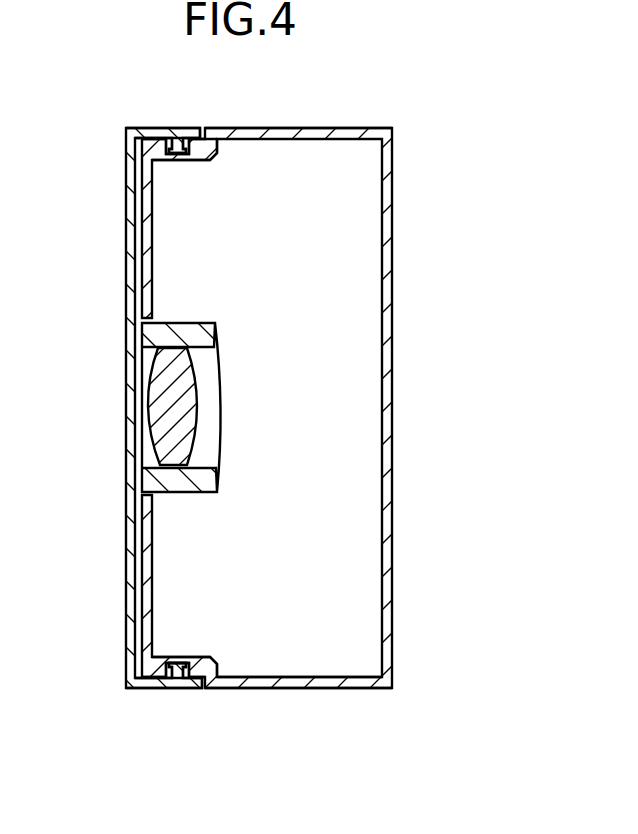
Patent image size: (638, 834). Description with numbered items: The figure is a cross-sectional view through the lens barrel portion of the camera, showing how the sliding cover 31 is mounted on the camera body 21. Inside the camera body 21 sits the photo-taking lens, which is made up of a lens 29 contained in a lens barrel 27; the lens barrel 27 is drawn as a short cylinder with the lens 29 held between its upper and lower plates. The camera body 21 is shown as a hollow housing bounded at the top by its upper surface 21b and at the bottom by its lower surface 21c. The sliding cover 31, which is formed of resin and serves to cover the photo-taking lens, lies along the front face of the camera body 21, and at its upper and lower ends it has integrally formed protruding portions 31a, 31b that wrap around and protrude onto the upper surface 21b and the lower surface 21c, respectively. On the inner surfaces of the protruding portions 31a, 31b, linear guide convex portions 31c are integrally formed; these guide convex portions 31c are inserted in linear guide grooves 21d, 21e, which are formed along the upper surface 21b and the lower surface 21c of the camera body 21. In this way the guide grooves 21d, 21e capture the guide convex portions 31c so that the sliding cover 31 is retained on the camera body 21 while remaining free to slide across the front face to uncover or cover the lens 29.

The camera body 21 is at (312, 118).
The upper surface 21b is at (238, 128).
The lower surface 21c is at (320, 680).
The linear guide groove 21d is at (177, 161).
The linear guide groove 21e is at (180, 660).
The lens barrel 27 is at (192, 336).
The lens 29 is at (190, 424).
The sliding cover 31 is at (116, 252).
The protruding portion 31a is at (150, 133).
The protruding portion 31b is at (148, 690).
The linear guide convex portion 31c is at (172, 154).